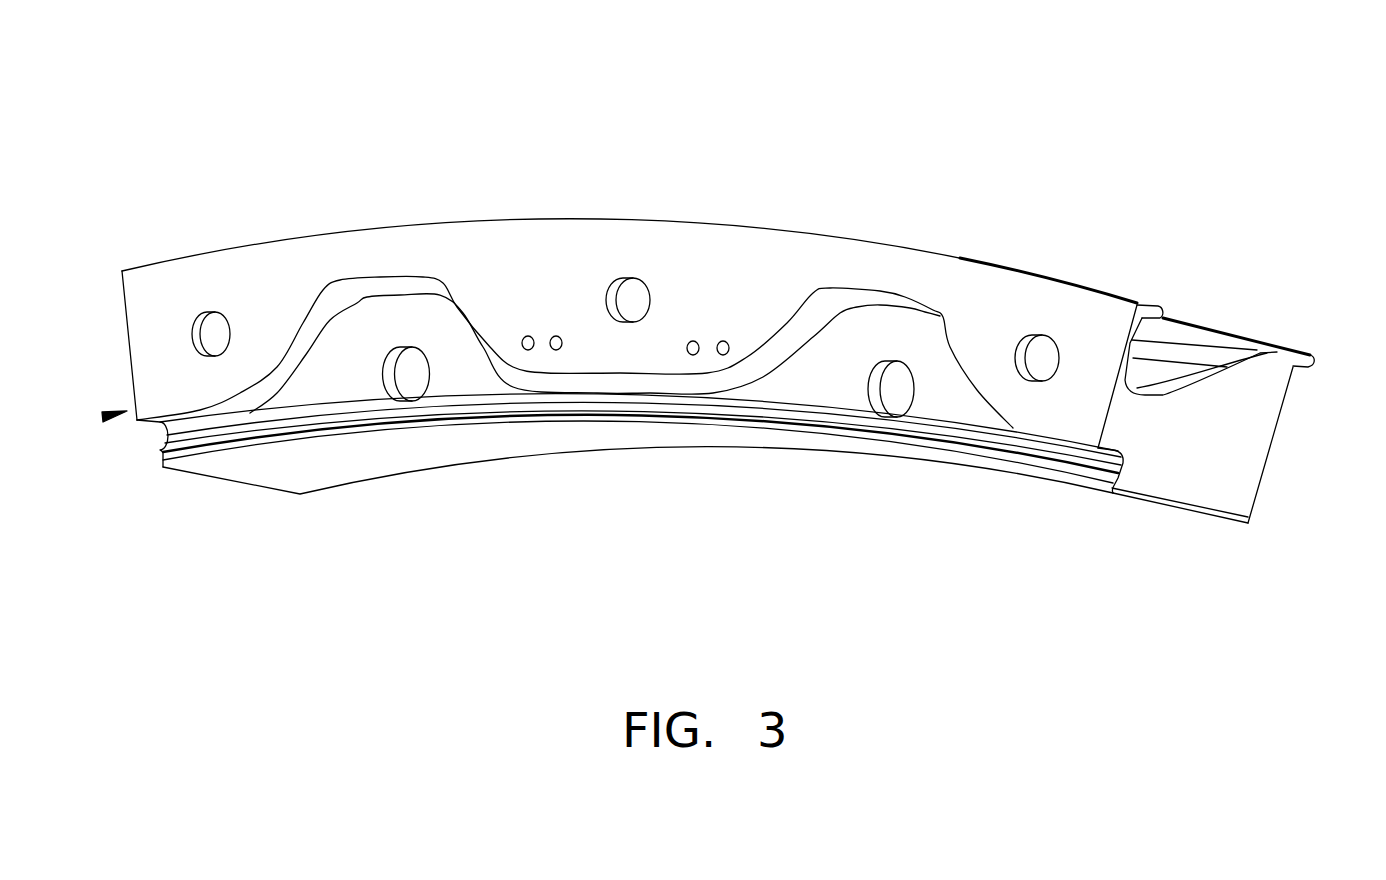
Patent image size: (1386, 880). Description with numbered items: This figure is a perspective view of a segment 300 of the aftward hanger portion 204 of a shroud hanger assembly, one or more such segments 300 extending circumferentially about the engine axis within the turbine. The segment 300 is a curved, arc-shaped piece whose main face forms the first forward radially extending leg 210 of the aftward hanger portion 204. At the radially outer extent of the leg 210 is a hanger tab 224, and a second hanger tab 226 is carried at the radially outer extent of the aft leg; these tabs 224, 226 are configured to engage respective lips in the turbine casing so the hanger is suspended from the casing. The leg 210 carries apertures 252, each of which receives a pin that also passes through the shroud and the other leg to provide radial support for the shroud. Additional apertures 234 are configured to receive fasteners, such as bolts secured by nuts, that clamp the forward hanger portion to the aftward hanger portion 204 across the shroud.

The aftward hanger portion 204 is at (890, 100).
The first forward radially extending leg 210 is at (1093, 307).
The hanger tab 224 is at (1150, 308).
The hanger tab 226 is at (1298, 363).
The aperture 234 is at (213, 333).
The aperture 252 is at (409, 381).
The segment 300 is at (412, 235).